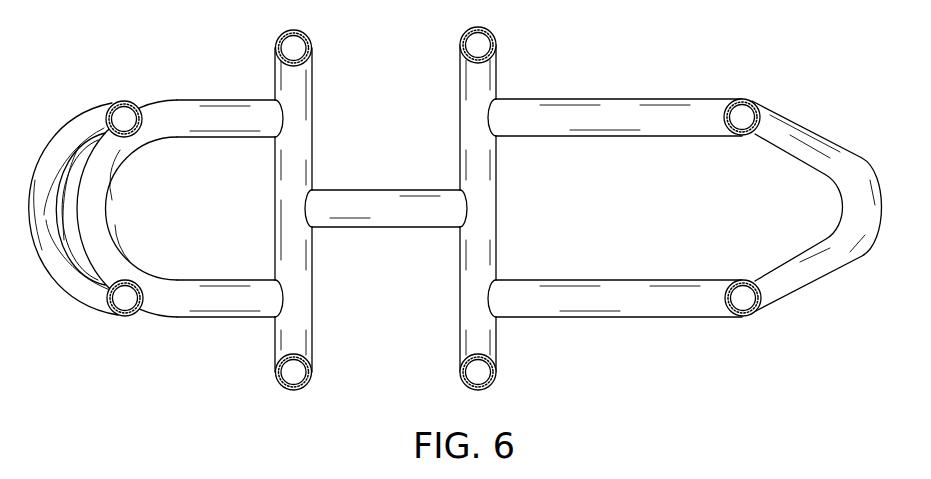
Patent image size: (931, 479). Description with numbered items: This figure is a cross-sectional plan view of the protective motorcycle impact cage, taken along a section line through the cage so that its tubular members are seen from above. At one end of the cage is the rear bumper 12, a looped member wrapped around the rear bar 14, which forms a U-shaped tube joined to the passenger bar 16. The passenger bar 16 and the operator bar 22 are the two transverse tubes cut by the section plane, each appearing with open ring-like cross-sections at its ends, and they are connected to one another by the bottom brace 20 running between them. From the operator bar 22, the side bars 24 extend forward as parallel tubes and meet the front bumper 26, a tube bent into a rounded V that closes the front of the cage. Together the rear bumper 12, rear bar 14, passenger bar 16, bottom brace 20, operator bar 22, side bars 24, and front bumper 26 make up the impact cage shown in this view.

The rear bumper 12 is at (62, 153).
The rear bar 14 is at (237, 302).
The passenger bar 16 is at (288, 83).
The bottom brace 20 is at (436, 198).
The operator bar 22 is at (483, 82).
The side bars 24 is at (567, 300).
The front bumper 26 is at (784, 277).